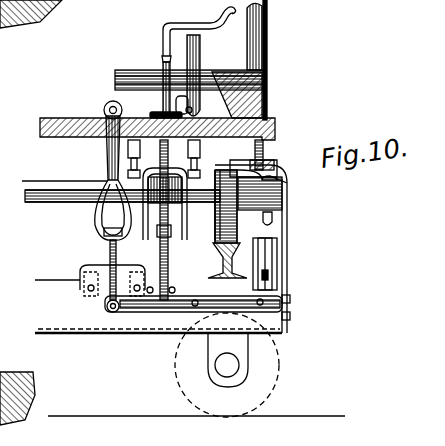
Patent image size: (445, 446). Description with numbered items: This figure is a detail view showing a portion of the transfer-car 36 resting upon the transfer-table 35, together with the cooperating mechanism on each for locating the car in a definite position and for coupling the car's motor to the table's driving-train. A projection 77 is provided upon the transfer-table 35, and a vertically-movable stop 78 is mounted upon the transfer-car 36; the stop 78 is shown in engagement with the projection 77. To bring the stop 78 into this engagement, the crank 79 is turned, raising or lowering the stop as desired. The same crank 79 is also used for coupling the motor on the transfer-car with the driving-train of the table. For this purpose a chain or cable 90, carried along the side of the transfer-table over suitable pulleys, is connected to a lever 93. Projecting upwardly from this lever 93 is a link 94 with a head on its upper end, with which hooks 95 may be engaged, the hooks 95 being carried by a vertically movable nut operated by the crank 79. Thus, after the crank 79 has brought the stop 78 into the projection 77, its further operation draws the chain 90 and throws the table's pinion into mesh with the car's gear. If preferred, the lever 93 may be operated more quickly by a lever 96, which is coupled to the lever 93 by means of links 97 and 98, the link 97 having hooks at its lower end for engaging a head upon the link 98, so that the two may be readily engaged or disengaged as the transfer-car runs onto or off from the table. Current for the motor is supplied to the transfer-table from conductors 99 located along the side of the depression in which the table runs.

The transfer-table 35 is at (133, 322).
The transfer-car 36 is at (255, 98).
The projection 77 is at (276, 249).
The vertically-movable stop 78 is at (262, 147).
The crank 79 is at (164, 28).
The chain or cable 90 is at (282, 289).
The lever 93 is at (182, 303).
The link 94 is at (163, 284).
The hooks 95 is at (231, 204).
The lever 96 is at (209, 75).
The link 97 is at (108, 174).
The link 98 is at (108, 255).
The conductors 99 is at (17, 369).